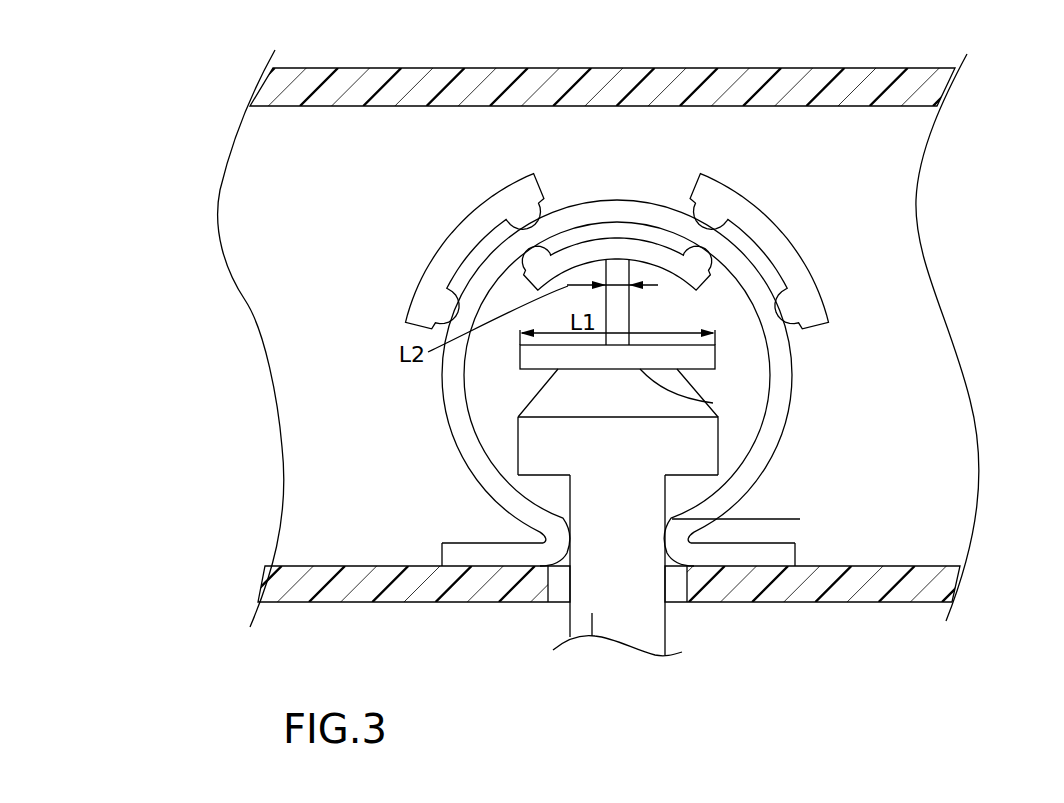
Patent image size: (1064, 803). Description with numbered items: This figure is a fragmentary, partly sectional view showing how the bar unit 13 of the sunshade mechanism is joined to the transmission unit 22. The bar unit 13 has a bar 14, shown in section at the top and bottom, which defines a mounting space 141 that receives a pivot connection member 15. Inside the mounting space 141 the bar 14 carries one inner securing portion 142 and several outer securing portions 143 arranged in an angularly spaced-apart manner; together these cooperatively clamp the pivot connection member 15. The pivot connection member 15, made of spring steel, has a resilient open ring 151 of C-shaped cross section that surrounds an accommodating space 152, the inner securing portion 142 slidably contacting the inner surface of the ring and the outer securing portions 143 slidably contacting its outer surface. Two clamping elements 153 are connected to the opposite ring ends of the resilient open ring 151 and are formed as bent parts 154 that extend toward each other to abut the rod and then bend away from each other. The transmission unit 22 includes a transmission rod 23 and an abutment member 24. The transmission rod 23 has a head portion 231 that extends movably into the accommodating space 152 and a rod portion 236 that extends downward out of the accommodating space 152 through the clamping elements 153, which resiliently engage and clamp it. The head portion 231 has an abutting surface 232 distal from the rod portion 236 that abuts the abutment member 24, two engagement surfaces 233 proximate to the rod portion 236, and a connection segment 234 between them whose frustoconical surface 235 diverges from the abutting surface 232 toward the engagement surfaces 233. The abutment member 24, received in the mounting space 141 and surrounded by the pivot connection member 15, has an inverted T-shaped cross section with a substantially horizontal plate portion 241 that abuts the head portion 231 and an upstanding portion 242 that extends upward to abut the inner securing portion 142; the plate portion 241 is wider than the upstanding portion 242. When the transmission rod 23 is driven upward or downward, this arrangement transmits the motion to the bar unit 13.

The bar unit 13 is at (188, 100).
The bar 14 is at (340, 80).
The mounting space 141 is at (392, 150).
The inner securing portion 142 is at (641, 248).
The outer securing portion 143 is at (497, 200).
The pivot connection member 15 is at (629, 370).
The resilient open ring 151 is at (594, 216).
The accommodating space 152 is at (493, 396).
The clamping element 153 is at (458, 552).
The bent part 154 is at (800, 519).
The transmission unit 22 is at (620, 674).
The transmission rod 23 is at (624, 518).
The head portion 231 is at (712, 455).
The abutting surface 232 is at (713, 403).
The engagement surface 233 is at (692, 480).
The connection segment 234 is at (735, 432).
The frustoconical surface 235 is at (557, 401).
The rod portion 236 is at (607, 645).
The abutment member 24 is at (787, 290).
The plate portion 241 is at (708, 356).
The upstanding portion 242 is at (630, 318).